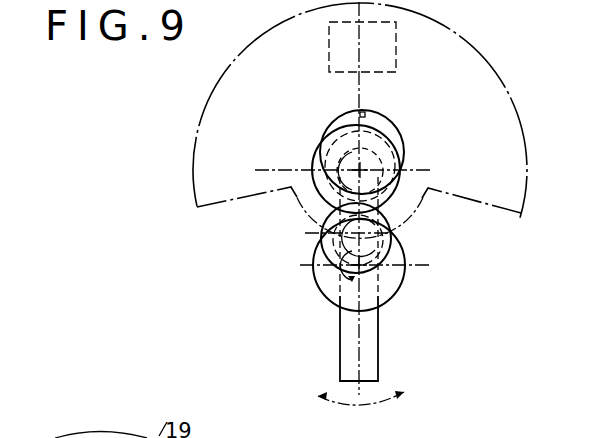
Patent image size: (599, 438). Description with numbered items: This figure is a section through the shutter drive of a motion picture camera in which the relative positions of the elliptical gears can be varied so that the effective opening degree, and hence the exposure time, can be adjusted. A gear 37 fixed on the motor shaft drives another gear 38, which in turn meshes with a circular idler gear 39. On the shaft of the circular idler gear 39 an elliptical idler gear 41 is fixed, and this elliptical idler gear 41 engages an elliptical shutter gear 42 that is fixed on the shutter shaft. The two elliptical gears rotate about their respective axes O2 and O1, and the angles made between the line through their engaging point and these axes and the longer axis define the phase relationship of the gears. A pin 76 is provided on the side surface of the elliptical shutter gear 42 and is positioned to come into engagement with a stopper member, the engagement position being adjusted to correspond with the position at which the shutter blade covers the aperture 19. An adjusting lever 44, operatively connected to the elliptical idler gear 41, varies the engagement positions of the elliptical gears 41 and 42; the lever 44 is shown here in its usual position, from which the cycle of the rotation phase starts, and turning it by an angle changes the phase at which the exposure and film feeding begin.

The aperture 19 is at (397, 50).
The pin 76 is at (365, 113).
The elliptical shutter gear 42 is at (380, 123).
The axis of rotation of the shutter gear O2 is at (362, 170).
The gear 38 is at (400, 175).
The gear 37 is at (322, 229).
The elliptical idler gear 41 is at (392, 247).
The circular idler gear 39 is at (318, 272).
The axis of rotation of the idler gear O1 is at (360, 266).
The adjusting lever 44 is at (372, 342).